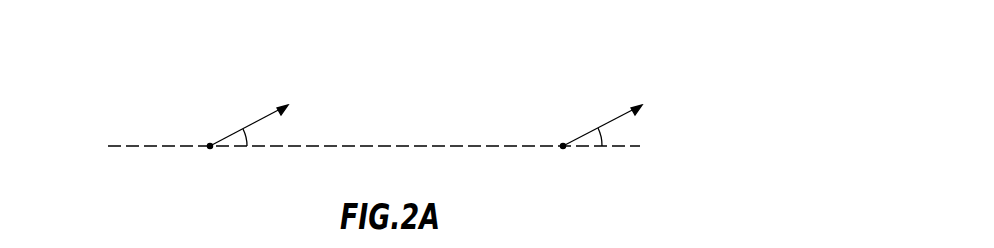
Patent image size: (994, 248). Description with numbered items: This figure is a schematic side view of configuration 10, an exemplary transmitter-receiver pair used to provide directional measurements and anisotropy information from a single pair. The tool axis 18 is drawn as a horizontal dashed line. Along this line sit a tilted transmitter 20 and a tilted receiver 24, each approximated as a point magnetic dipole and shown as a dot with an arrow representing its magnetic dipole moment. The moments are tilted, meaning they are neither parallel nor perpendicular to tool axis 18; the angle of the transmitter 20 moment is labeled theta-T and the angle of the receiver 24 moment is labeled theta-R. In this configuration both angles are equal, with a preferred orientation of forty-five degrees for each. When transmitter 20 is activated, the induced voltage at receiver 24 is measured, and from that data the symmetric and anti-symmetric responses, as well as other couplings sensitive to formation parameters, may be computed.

The configuration 10 is at (635, 83).
The tool axis 18 is at (117, 145).
The tilted transmitter 20 is at (207, 150).
The tilted receiver 24 is at (564, 149).